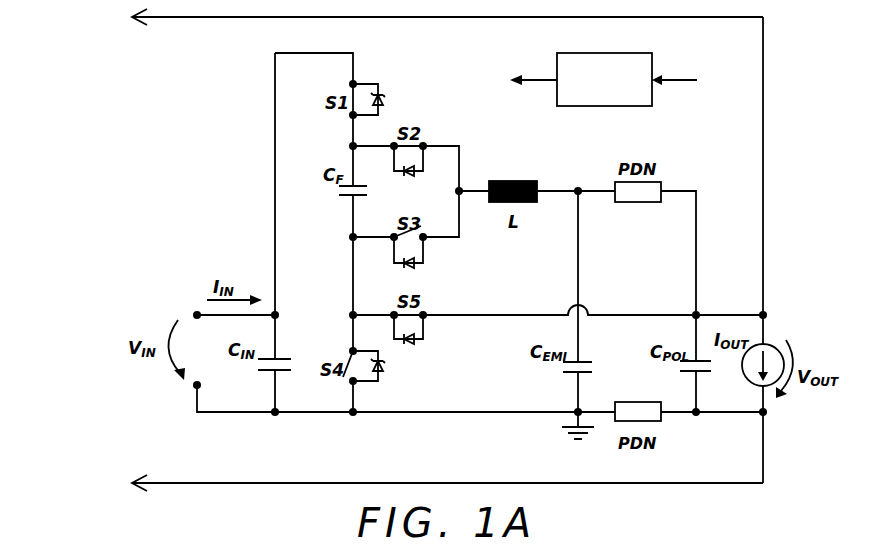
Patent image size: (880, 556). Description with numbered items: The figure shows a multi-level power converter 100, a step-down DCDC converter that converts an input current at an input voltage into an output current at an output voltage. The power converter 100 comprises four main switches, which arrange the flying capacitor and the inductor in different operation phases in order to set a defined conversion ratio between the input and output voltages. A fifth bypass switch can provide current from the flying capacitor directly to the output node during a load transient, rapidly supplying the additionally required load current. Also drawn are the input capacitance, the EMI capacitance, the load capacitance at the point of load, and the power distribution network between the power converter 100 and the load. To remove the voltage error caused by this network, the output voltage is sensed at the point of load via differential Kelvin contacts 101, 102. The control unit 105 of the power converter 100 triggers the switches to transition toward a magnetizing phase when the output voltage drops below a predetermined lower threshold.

The multi-level power converter 100 is at (97, 100).
The Kelvin contact V_OUT_N 101 is at (206, 483).
The Kelvin contact V_OUT_P 102 is at (204, 18).
The control unit 105 is at (620, 53).